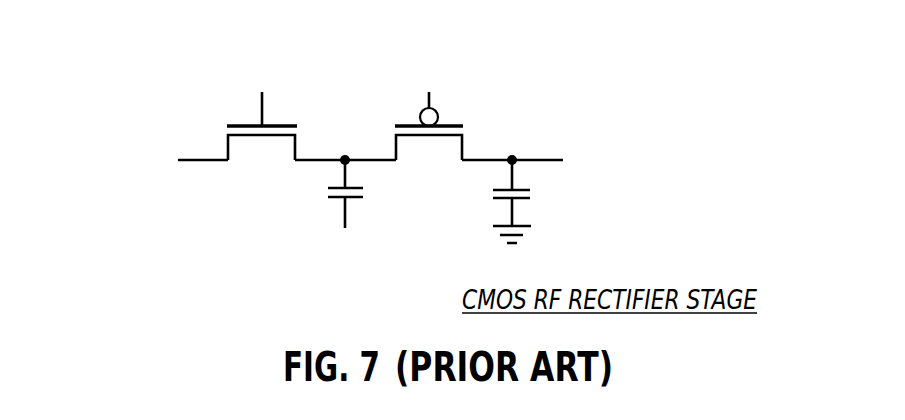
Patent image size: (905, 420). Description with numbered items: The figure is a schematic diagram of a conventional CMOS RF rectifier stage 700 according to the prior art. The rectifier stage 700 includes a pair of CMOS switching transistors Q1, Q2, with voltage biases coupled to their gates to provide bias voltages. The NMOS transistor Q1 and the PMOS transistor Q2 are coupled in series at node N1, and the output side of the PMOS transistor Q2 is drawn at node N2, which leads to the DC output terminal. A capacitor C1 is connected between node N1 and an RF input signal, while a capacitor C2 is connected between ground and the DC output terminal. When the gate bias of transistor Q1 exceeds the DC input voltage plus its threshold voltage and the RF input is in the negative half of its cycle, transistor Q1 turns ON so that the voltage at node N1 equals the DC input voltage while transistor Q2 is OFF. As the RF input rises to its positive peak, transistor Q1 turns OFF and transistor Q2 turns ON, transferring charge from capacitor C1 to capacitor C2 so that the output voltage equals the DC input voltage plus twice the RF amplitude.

The CMOS RF rectifier stage 700 is at (150, 103).
The NMOS transistor Q1 is at (262, 127).
The PMOS transistor Q2 is at (429, 127).
The node N1 is at (345, 147).
The second node N2 is at (512, 147).
The capacitor C1 is at (360, 194).
The capacitor C2 is at (526, 201).